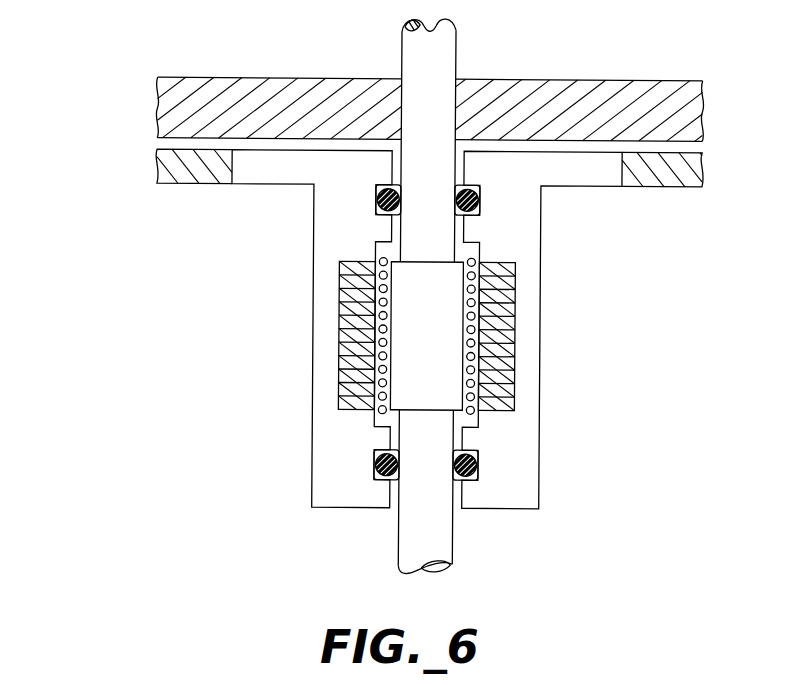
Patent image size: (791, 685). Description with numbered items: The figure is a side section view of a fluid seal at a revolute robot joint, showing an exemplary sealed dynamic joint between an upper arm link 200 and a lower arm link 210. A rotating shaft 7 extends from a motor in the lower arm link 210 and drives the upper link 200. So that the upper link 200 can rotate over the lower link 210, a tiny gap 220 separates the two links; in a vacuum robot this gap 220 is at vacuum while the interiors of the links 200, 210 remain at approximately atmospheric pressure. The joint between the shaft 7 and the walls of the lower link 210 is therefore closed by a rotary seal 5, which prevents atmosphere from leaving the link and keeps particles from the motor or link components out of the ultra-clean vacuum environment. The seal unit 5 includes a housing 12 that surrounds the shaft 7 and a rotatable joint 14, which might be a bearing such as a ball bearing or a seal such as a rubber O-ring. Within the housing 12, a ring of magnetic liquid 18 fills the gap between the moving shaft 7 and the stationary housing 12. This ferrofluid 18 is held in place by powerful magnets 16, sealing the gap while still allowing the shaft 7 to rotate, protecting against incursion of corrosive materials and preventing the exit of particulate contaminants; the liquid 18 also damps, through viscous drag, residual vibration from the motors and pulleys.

The rotary seal 5 is at (557, 462).
The rotating shaft 7 is at (425, 50).
The housing 12 is at (502, 236).
The rotatable joint 14 is at (374, 461).
The magnets 16 is at (356, 261).
The magnetic liquid 18 is at (339, 308).
The upper arm link 200 is at (251, 81).
The lower arm link 210 is at (216, 180).
The gap 220 is at (139, 143).